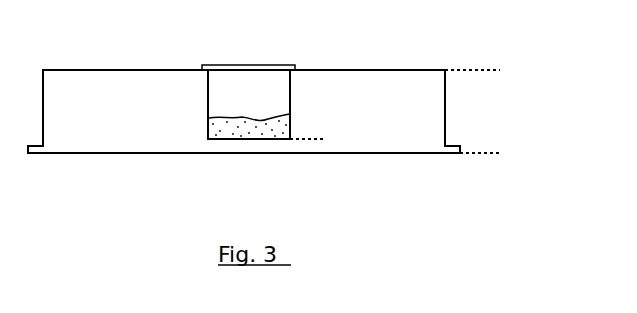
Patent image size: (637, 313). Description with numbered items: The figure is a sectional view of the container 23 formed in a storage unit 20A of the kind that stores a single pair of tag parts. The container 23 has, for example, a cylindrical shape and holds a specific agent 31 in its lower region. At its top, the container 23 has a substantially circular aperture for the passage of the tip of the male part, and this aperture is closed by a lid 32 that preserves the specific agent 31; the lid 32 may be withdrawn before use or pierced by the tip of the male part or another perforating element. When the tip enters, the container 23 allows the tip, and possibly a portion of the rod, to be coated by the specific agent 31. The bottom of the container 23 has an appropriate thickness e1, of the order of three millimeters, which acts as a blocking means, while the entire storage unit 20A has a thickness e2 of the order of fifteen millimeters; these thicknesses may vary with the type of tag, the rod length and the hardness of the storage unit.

The storage unit 20A is at (414, 95).
The container 23 is at (273, 93).
The lid 32 is at (232, 63).
The specific agent 31 is at (250, 130).
The thickness of the bottom of the container e1 is at (321, 139).
The thickness of the entire storage unit e2 is at (502, 70).